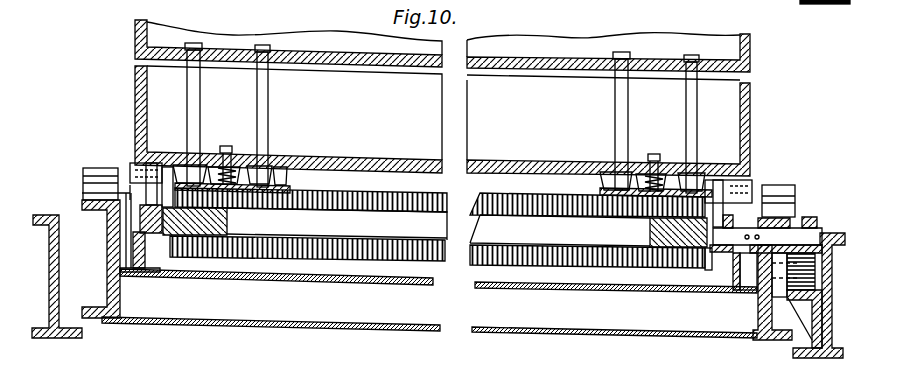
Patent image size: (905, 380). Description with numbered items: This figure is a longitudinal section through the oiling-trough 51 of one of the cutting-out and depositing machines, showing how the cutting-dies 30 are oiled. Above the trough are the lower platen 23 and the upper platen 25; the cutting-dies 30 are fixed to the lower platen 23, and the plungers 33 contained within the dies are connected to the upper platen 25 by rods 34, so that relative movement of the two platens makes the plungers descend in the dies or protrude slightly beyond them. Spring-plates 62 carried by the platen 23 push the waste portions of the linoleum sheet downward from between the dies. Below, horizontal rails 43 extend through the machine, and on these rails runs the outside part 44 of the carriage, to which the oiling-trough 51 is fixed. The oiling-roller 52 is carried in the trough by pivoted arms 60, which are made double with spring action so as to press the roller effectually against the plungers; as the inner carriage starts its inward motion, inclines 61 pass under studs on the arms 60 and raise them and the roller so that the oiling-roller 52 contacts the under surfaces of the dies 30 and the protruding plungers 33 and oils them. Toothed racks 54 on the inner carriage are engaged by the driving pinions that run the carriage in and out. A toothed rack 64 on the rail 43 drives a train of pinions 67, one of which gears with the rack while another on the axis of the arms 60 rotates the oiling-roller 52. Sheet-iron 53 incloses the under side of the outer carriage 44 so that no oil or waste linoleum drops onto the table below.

The lower platen 23 is at (442, 121).
The upper platen 25 is at (318, 34).
The cutting-dies 30 is at (286, 162).
The plungers 33 is at (180, 153).
The rods 34 is at (264, 99).
The horizontal rails 43 is at (439, 285).
The outside part of carriage 44 is at (756, 303).
The oiling-trough 51 is at (384, 283).
The oiling-roller 52 is at (438, 193).
The sheet-iron 53 is at (369, 328).
The toothed racks 54 is at (440, 181).
The pivoted arms 60 is at (132, 167).
The inclines 61 is at (84, 194).
The spring-plates 62 is at (264, 165).
The toothed rack 64 is at (806, 7).
The train of pinions 67 is at (789, 300).